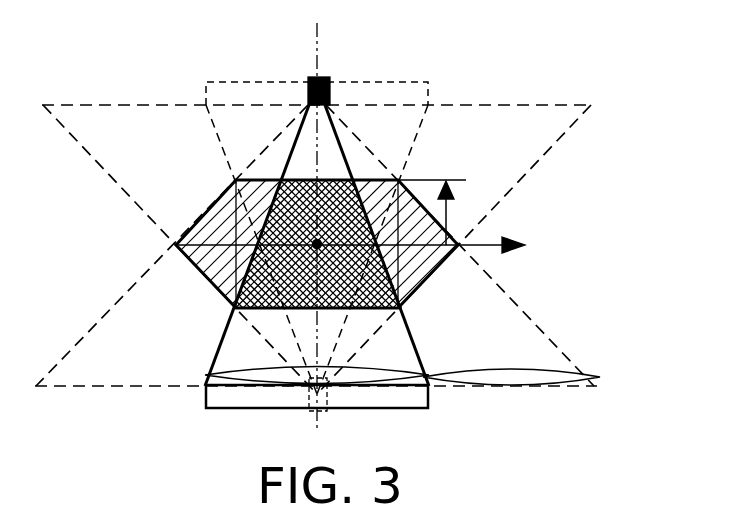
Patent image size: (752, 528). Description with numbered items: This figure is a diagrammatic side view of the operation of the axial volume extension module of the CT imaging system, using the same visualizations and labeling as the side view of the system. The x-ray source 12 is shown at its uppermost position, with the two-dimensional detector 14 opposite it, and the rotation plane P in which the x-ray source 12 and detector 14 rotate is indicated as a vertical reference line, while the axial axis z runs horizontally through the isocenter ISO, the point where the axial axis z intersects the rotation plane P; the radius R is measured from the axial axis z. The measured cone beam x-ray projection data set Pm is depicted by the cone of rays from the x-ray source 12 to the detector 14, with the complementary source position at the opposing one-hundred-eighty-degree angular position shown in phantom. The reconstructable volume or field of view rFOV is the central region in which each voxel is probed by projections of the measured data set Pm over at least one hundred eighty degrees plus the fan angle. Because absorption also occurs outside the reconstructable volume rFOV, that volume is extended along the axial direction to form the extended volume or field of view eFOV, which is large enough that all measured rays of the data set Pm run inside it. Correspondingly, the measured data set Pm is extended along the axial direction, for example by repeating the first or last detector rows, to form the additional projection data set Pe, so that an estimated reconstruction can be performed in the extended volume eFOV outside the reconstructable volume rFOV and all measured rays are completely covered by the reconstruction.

The x-ray source 12 is at (331, 86).
The two-dimensional detector 14 is at (415, 399).
The rotation plane P is at (315, 32).
The measured cone beam x-ray projection data set Pm is at (205, 375).
The additional projection data set Pe is at (600, 377).
The reconstructable volume or field of view rFOV is at (282, 214).
The extended volume or field of view eFOV is at (176, 245).
The isocenter ISO is at (395, 281).
The radius R is at (436, 212).
The axial axis z is at (359, 248).